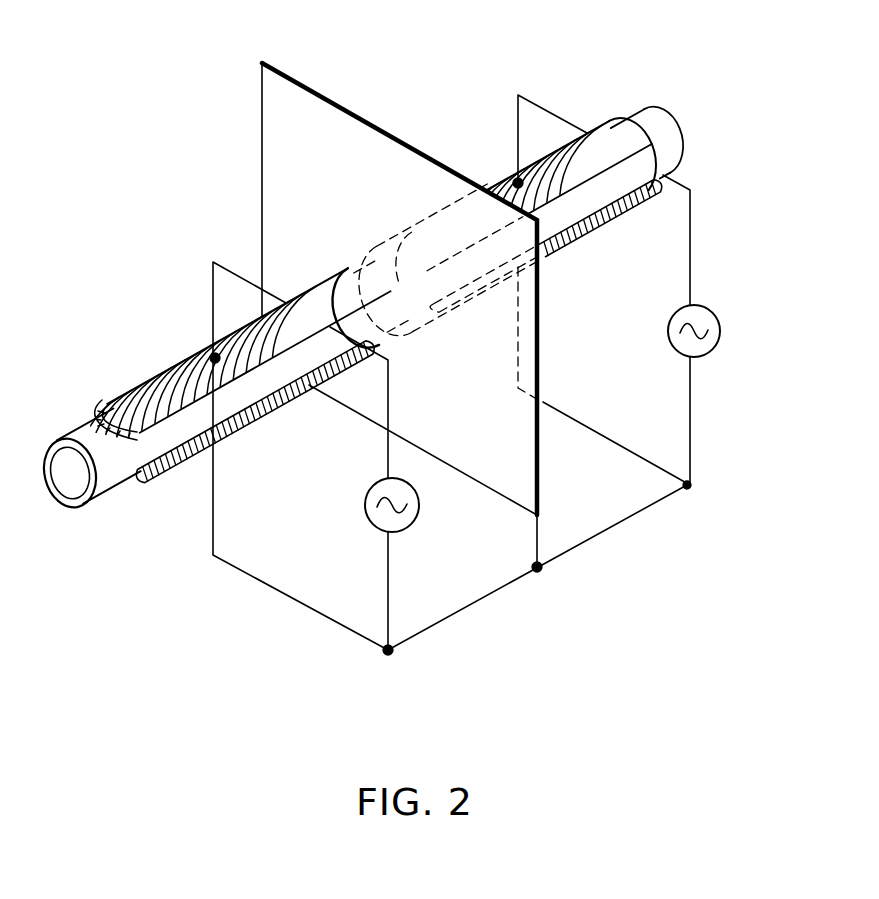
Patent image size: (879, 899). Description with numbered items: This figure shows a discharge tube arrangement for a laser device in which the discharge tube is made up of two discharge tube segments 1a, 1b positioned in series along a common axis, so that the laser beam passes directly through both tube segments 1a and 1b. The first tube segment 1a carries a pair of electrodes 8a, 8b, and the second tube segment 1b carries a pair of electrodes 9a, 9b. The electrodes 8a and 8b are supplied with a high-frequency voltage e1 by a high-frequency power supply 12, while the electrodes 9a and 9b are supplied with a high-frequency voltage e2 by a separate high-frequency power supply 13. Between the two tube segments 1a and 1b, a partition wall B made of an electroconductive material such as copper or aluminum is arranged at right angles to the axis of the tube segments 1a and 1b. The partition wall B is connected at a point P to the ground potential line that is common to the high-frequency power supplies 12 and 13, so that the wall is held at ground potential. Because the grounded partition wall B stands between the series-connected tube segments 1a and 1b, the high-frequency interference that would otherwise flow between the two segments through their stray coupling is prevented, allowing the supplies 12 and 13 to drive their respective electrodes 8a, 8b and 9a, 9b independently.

The discharge tube segment 1a is at (66, 508).
The discharge tube segment 1b is at (652, 112).
The electrode 8a is at (157, 374).
The electrode 8b is at (168, 483).
The electrode 9a is at (606, 120).
The electrode 9b is at (633, 208).
The high-frequency power supply 12 is at (365, 497).
The high-frequency power supply 13 is at (710, 312).
The partition wall B is at (312, 86).
The connection point P is at (542, 568).
The voltage e1 is at (443, 550).
The voltage e2 is at (753, 382).